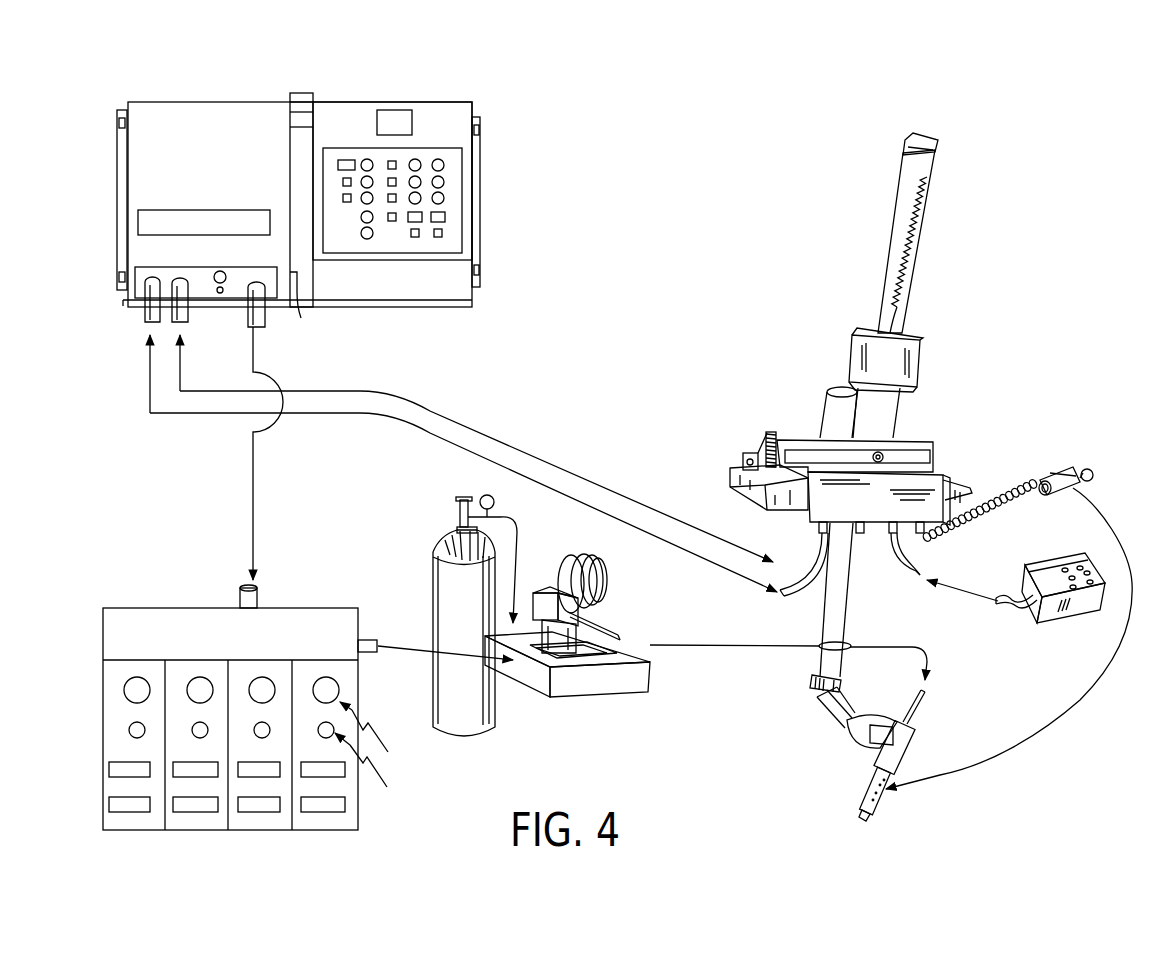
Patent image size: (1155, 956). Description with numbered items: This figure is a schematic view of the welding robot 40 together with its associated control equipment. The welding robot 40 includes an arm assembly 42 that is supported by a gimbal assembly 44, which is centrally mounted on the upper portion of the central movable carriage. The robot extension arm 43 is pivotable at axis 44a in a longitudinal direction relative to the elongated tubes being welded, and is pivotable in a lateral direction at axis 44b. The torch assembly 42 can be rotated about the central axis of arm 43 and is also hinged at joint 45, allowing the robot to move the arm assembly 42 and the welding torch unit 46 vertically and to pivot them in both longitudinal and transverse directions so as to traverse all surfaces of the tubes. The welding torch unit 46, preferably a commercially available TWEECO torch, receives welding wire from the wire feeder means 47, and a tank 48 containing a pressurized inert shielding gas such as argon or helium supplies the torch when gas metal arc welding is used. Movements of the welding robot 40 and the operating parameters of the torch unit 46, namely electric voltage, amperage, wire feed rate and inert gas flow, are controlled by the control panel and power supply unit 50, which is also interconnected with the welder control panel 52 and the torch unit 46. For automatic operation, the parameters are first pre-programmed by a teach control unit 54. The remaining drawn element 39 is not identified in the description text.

The remote control pendant 39 is at (1053, 610).
The welding robot 40 is at (953, 392).
The arm assembly 42 is at (848, 593).
The robot extension arm 43 is at (897, 225).
The gimbal assembly 44 is at (947, 475).
The longitudinal pivot axis 44a is at (745, 463).
The lateral pivot axis 44b is at (887, 455).
The joint 45 is at (812, 688).
The welding torch unit 46 is at (873, 767).
The wire feeder means 47 is at (610, 587).
The tank 48 is at (442, 537).
The control panel and power supply unit 50 is at (442, 108).
The welder control panel 52 is at (203, 612).
The teach control unit 54 is at (1072, 473).